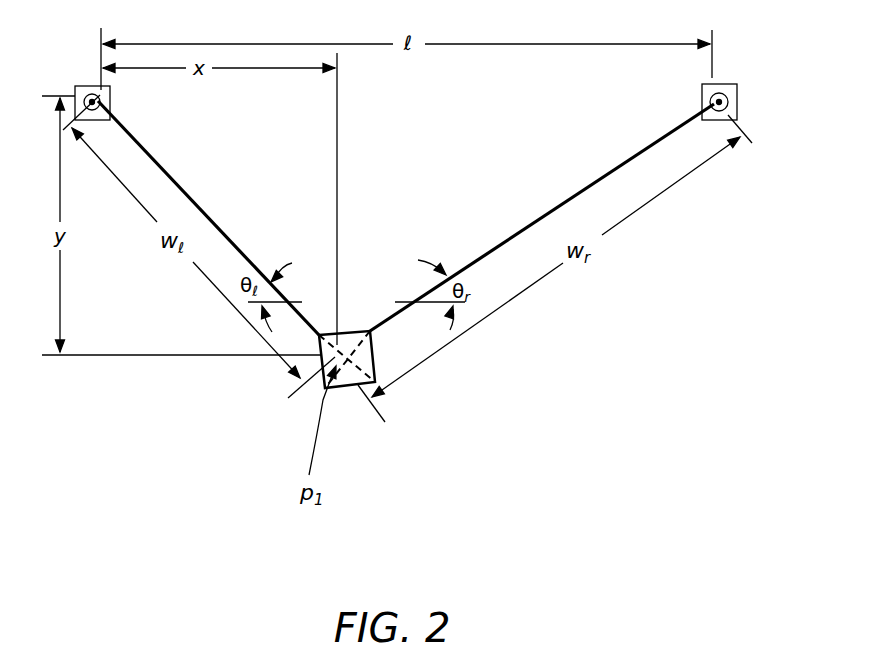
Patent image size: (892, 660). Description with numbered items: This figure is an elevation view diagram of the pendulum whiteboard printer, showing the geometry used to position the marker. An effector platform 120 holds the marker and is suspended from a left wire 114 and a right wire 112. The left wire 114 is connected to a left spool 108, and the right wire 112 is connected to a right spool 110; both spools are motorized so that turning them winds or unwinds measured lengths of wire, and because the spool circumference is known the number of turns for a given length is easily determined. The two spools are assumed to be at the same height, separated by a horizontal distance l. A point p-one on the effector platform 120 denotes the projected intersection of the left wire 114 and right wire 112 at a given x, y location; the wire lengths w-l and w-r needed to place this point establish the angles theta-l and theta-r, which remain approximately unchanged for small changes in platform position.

The left spool 108 is at (88, 86).
The right spool 110 is at (728, 84).
The right wire 112 is at (567, 199).
The left wire 114 is at (200, 207).
The effector platform 120 is at (380, 356).